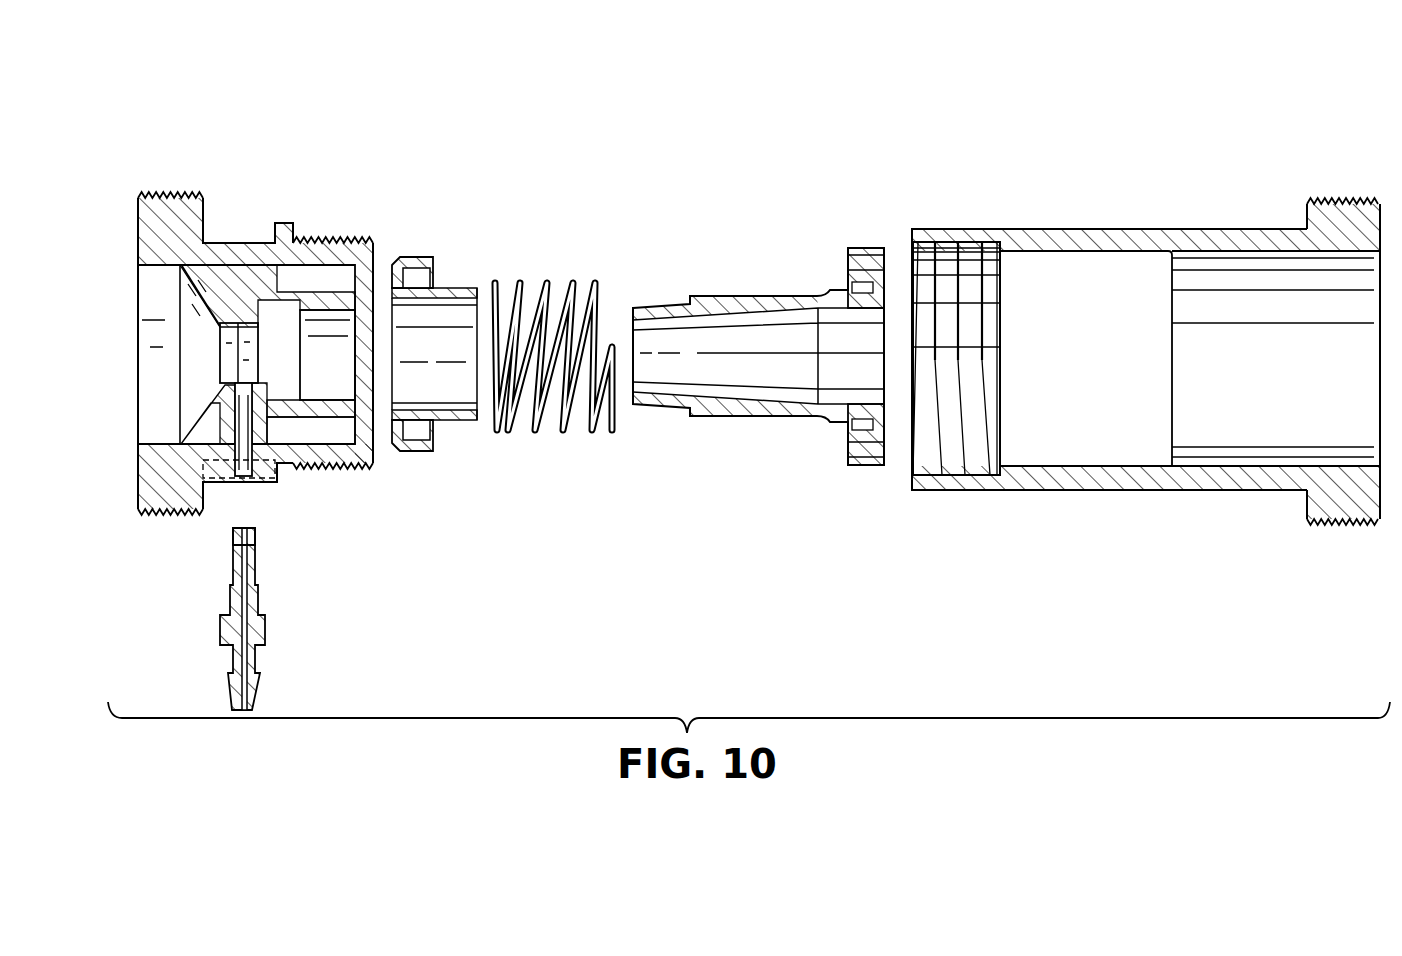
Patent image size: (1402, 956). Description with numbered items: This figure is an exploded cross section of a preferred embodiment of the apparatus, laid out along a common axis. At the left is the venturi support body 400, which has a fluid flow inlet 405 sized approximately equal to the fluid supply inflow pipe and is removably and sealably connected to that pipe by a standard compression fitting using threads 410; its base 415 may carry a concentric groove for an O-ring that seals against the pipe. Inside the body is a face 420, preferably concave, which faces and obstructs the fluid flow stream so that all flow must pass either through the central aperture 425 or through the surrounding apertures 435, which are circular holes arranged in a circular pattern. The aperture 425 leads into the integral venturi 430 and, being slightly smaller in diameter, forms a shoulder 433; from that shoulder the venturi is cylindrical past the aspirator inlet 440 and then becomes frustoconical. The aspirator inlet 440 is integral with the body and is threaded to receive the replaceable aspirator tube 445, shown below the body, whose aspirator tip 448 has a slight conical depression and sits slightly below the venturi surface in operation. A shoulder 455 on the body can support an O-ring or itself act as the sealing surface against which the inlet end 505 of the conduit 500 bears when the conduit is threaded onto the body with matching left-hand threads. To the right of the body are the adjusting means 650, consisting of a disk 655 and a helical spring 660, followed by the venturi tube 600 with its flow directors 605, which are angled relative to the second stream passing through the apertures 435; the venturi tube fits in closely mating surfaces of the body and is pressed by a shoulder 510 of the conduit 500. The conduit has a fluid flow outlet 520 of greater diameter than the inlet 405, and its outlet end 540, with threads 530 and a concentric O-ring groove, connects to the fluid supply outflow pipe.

The venturi support body 400 is at (258, 120).
The fluid flow inlet 405 is at (137, 384).
The threads 410 is at (165, 520).
The base 415 is at (137, 229).
The face 420 is at (215, 318).
The aperture 425 is at (222, 350).
The integral venturi 430 is at (246, 350).
The shoulder 433 is at (240, 380).
The apertures 435 is at (212, 322).
The aspirator inlet 440 is at (245, 477).
The aspirator tube 445 is at (262, 630).
The aspirator tip 448 is at (238, 512).
The shoulder 455 is at (290, 228).
The conduit 500 is at (1157, 168).
The inlet end 505 is at (912, 232).
The shoulder 510 is at (1172, 270).
The fluid flow outlet 520 is at (1250, 375).
The threads 530 is at (1315, 201).
The outlet end 540 is at (1385, 207).
The venturi tube 600 is at (762, 212).
The flow directors 605 is at (868, 452).
The adjusting means 650 is at (615, 548).
The disk 655 is at (433, 452).
The helical spring 660 is at (565, 432).